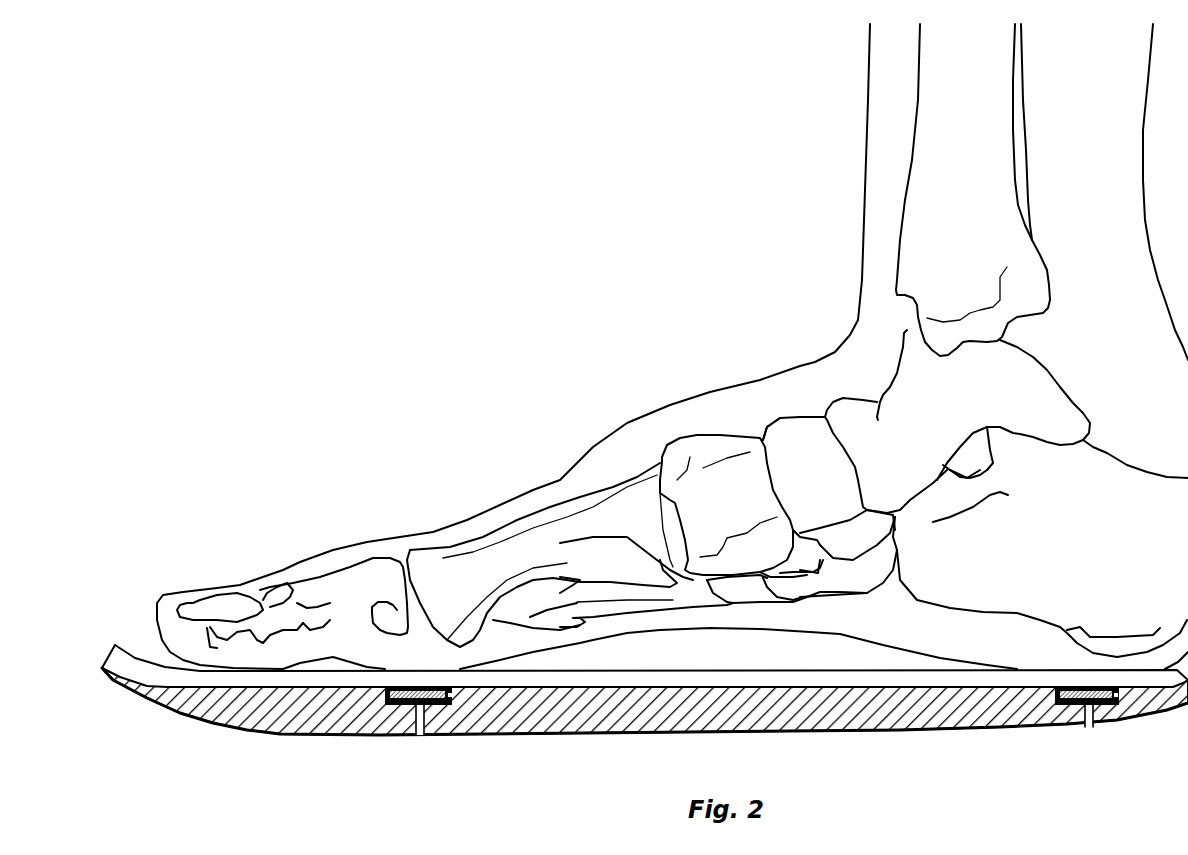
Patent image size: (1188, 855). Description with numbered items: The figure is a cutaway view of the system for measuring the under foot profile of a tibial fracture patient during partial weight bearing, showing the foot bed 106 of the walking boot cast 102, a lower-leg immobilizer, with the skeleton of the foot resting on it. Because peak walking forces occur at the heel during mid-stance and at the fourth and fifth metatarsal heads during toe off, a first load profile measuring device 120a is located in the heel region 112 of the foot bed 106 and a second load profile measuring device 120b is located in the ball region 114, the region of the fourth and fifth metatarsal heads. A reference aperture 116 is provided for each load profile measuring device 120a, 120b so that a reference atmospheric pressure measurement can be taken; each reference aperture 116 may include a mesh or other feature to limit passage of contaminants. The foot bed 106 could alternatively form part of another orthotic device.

The walking boot cast 102 is at (578, 178).
The foot bed 106 is at (141, 652).
The heel region 112 is at (1071, 733).
The ball region 114 is at (433, 736).
The reference aperture 116 is at (421, 737).
The first load profile measuring device 120a is at (1112, 720).
The second load profile measuring device 120b is at (396, 707).